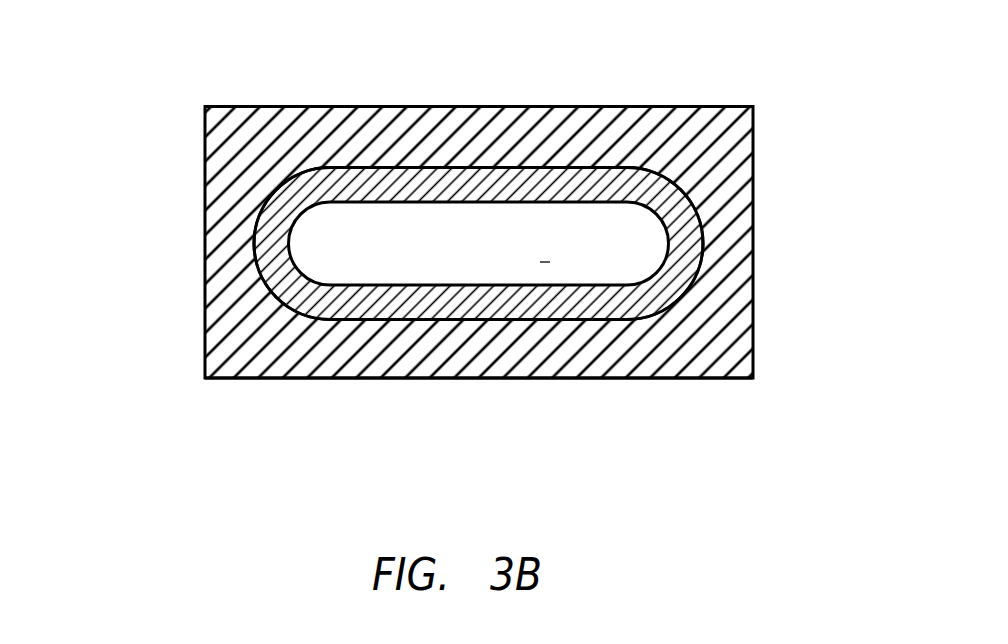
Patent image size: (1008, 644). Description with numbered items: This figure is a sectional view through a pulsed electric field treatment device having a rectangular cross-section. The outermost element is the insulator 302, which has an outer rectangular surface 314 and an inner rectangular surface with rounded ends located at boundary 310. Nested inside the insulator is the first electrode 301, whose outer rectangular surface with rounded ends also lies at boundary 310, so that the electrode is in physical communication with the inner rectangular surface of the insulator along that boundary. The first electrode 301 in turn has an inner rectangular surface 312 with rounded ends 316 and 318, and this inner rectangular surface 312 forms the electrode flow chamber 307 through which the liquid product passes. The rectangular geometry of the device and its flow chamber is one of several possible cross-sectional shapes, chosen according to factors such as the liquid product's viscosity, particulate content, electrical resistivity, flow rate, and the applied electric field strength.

The insulator 302 is at (222, 187).
The boundary 310 is at (572, 167).
The inner rectangular surface 312 is at (464, 196).
The electrode flow chamber 307 is at (545, 262).
The rounded end 318 is at (253, 263).
The rounded end 316 is at (680, 248).
The first electrode 301 is at (337, 306).
The outer rectangular surface 314 is at (488, 379).